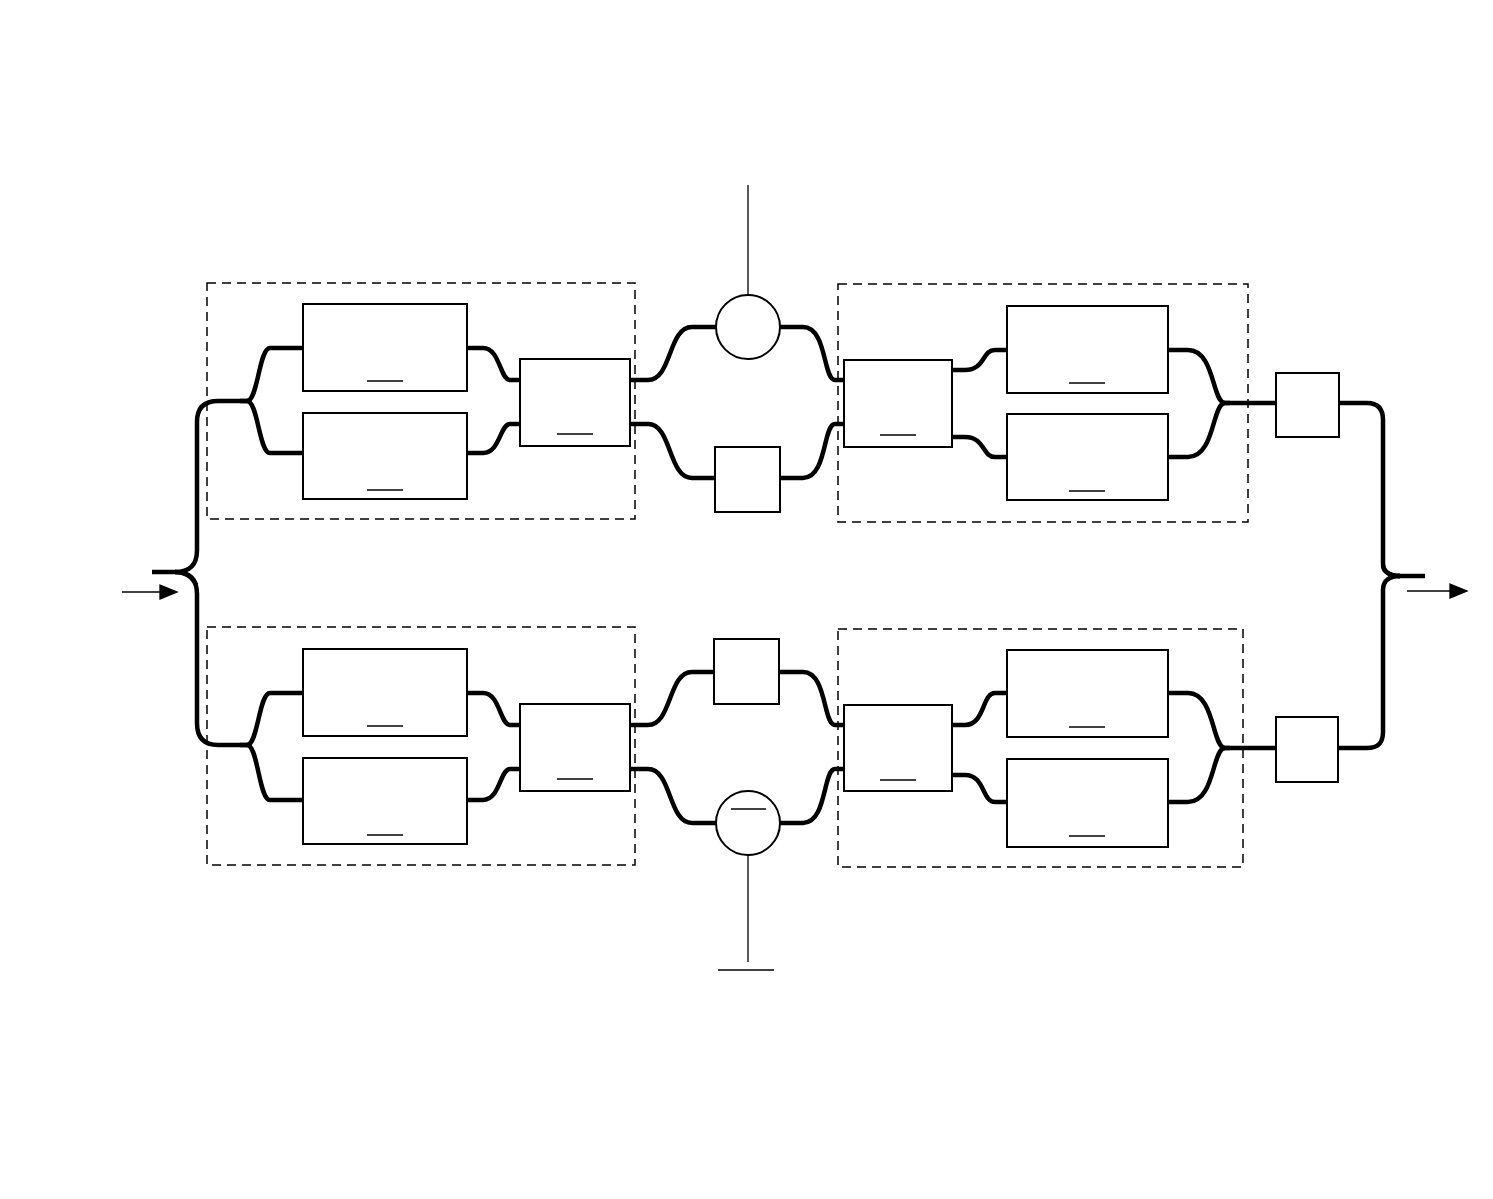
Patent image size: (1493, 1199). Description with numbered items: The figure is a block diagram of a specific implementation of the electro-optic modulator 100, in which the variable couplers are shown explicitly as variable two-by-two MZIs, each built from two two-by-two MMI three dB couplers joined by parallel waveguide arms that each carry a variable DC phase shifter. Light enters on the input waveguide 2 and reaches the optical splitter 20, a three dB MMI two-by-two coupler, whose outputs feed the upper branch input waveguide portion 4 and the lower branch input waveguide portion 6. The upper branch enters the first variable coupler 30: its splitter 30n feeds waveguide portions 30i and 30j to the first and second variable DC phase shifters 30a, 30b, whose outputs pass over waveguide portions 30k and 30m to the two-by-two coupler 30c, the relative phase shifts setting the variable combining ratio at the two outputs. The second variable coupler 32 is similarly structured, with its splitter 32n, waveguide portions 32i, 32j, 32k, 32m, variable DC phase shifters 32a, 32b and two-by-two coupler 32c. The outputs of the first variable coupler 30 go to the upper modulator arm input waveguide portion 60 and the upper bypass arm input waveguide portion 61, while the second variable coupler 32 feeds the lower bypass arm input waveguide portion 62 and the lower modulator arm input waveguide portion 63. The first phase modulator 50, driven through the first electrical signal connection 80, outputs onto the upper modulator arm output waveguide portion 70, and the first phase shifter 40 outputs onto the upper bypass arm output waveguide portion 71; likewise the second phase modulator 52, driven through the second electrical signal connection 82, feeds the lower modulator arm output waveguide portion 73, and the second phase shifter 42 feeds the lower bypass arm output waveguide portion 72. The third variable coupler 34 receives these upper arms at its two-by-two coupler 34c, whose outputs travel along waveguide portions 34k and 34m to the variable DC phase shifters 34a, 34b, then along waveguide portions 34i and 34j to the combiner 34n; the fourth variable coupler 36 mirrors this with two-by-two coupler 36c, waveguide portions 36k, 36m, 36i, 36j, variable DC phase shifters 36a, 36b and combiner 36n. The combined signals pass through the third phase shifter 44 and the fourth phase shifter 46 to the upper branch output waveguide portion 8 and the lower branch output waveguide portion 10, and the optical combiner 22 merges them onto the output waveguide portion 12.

The electro-optic modulator 100 is at (273, 200).
The input waveguide 2 is at (162, 568).
The upper branch input waveguide portion 4 is at (206, 403).
The lower branch input waveguide portion 6 is at (203, 747).
The upper branch output waveguide portion 8 is at (1377, 405).
The lower branch output waveguide portion 10 is at (1377, 750).
The output waveguide portion 12 is at (1422, 575).
The optical splitter 20 is at (200, 578).
The optical combiner 22 is at (1393, 577).
The first variable coupler 30 is at (512, 282).
The first variable DC phase shifter 30a is at (385, 347).
The second variable DC phase shifter 30b is at (385, 456).
The 2×2 coupler 30c is at (575, 402).
The waveguide portion 30i is at (273, 345).
The waveguide portion 30j is at (272, 460).
The waveguide portion 30k is at (487, 345).
The waveguide portion 30m is at (487, 462).
The splitter 30n is at (248, 398).
The second variable coupler 32 is at (514, 626).
The variable DC phase shifter 32a is at (385, 692).
The variable DC phase shifter 32b is at (385, 801).
The 2×2 coupler 32c is at (575, 747).
The waveguide portion 32i is at (272, 802).
The waveguide portion 32j is at (273, 690).
The waveguide portion 32k is at (487, 690).
The waveguide portion 32m is at (487, 807).
The splitter 32n is at (250, 748).
The third variable coupler 34 is at (1108, 282).
The first variable DC phase shifter 34a is at (1087, 349).
The second variable DC phase shifter 34b is at (1087, 457).
The 2×2 coupler 34c is at (898, 403).
The waveguide portion 34i is at (1197, 350).
The waveguide portion 34j is at (1198, 460).
The waveguide portion 34k is at (987, 348).
The waveguide portion 34m is at (987, 463).
The combiner 34n is at (1222, 403).
The fourth variable coupler 36 is at (1108, 627).
The variable DC phase shifter 36a is at (1087, 693).
The variable DC phase shifter 36b is at (1087, 803).
The 2×2 coupler 36c is at (898, 748).
The waveguide portion 36i is at (1197, 693).
The waveguide portion 36j is at (1195, 805).
The waveguide portion 36k is at (987, 807).
The waveguide portion 36m is at (987, 695).
The combiner 36n is at (1222, 748).
The first phase shifter 40 is at (732, 447).
The second phase shifter 42 is at (760, 704).
The third phase shifter 44 is at (1322, 372).
The fourth phase shifter 46 is at (1320, 785).
The first phase modulator 50 is at (727, 300).
The second phase modulator 52 is at (723, 850).
The upper modulator arm input waveguide portion 60 is at (683, 323).
The upper bypass arm input waveguide portion 61 is at (683, 487).
The lower bypass arm input waveguide portion 62 is at (683, 668).
The lower modulator arm input waveguide portion 63 is at (683, 827).
The upper modulator arm output waveguide portion 70 is at (803, 323).
The upper bypass arm output waveguide portion 71 is at (803, 487).
The lower bypass arm output waveguide portion 72 is at (803, 668).
The lower modulator arm output waveguide portion 73 is at (802, 827).
The first electrical signal connection 80 is at (748, 228).
The second electrical signal connection 82 is at (748, 920).